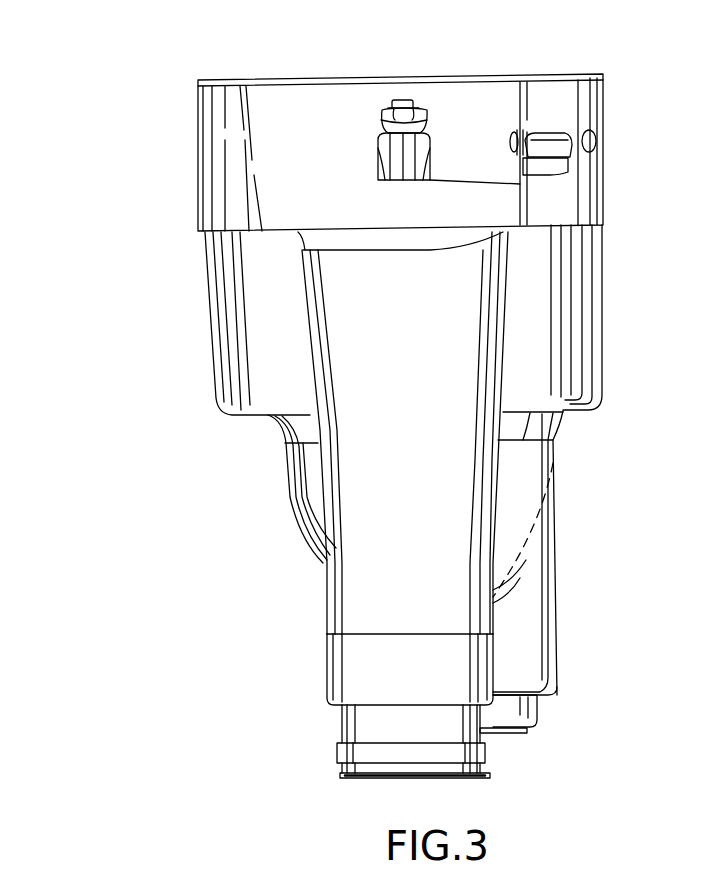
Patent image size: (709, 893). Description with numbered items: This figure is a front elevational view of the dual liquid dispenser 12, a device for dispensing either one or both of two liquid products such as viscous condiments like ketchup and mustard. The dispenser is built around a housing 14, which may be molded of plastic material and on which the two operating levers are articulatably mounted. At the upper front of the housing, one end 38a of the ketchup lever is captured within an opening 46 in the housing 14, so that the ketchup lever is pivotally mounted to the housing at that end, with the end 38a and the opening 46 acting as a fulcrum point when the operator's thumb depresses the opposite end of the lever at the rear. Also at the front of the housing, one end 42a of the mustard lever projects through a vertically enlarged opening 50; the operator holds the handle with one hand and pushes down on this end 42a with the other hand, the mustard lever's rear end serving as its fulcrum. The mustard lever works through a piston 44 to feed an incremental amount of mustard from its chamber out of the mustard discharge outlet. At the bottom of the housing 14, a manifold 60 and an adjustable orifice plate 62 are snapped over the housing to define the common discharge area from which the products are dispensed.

The dual liquid dispenser 12 is at (195, 280).
The housing 14 is at (560, 287).
The end of ketchup lever 38a is at (558, 142).
The end of mustard lever 42a is at (418, 100).
The piston 44 is at (378, 160).
The opening 46 is at (550, 170).
The vertically enlarged opening 50 is at (520, 184).
The manifold 60 is at (465, 755).
The adjustable orifice plate 62 is at (478, 777).